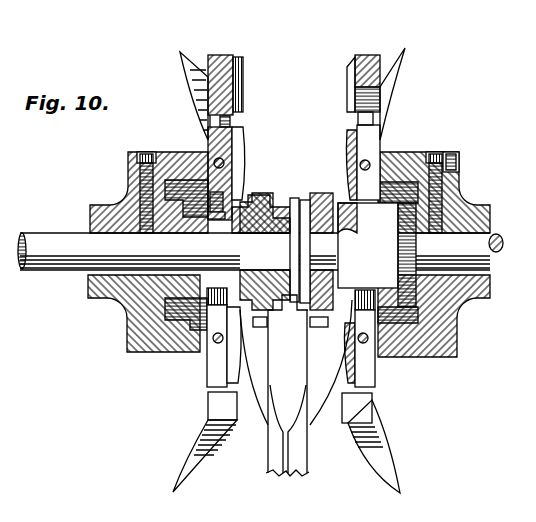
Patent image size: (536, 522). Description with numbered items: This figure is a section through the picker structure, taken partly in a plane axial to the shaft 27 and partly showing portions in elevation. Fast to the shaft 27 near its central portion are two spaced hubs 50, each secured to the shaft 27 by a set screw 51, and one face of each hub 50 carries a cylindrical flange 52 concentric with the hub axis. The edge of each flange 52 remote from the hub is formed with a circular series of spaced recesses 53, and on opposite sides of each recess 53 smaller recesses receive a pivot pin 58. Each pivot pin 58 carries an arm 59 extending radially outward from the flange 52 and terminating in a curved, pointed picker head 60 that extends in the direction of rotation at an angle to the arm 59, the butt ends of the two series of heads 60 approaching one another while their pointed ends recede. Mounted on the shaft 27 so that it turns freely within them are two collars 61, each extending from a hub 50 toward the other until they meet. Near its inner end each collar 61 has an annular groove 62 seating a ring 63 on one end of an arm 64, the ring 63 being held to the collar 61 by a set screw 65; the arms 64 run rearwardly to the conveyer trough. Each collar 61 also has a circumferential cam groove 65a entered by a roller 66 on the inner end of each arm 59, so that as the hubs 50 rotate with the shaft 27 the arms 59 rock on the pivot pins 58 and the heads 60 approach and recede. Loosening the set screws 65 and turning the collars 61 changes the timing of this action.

The shaft 27 is at (50, 240).
The hub 50 is at (120, 303).
The set screw 51 is at (137, 188).
The cylindrical flange 52 is at (190, 352).
The recess 53 is at (210, 152).
The pivot pin 58 is at (224, 162).
The arm 59 is at (215, 104).
The picker head 60 is at (362, 122).
The collar 61 is at (356, 232).
The annular groove 62 is at (320, 222).
The ring 63 is at (312, 193).
The arm 64 is at (295, 474).
The set screw 65 is at (310, 325).
The circumferential cam groove 65a is at (228, 238).
The roller 66 is at (440, 156).